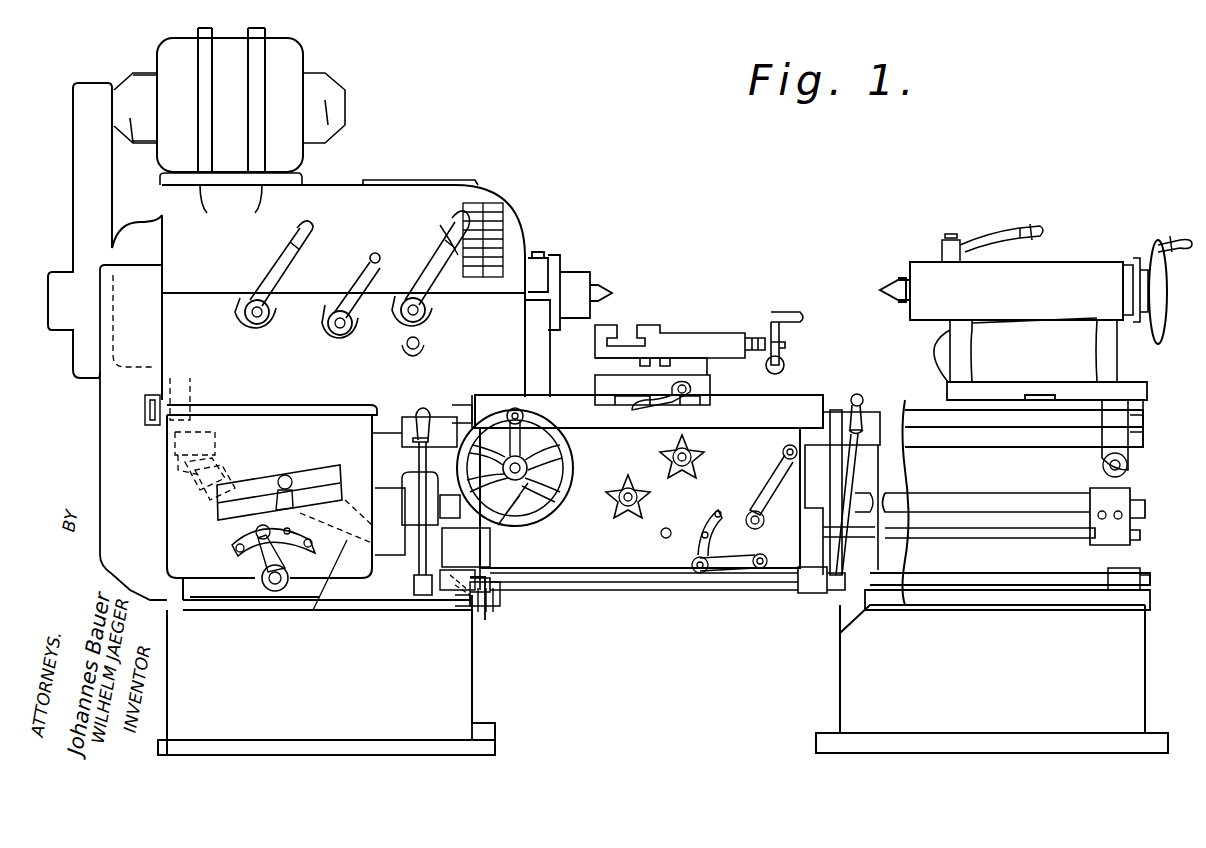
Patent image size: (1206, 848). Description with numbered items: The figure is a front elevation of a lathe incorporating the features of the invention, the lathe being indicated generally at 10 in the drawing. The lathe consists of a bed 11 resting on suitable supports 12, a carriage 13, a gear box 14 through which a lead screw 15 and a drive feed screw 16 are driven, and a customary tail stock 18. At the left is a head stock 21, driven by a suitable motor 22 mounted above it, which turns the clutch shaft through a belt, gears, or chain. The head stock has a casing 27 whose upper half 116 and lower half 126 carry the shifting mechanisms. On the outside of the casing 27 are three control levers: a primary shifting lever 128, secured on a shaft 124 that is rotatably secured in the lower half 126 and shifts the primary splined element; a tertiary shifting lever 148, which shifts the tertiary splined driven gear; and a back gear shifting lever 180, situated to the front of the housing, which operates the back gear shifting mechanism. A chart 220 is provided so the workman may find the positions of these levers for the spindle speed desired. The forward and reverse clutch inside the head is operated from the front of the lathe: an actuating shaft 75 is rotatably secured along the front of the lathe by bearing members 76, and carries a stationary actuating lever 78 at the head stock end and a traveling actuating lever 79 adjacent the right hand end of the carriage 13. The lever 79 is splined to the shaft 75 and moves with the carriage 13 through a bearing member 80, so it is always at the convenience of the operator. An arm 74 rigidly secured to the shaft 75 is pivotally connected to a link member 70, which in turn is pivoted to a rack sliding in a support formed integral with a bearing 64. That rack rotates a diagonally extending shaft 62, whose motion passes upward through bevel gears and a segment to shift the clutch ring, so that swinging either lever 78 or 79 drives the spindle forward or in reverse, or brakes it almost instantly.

The lead screw feed connection 10 is at (472, 555).
The bed 11 is at (905, 410).
The supports 12 is at (455, 700).
The carriage 13 is at (635, 550).
The gear box 14 is at (222, 570).
The lead screw 15 is at (925, 507).
The drive feed screw 16 is at (958, 598).
The tail stock 18 is at (1040, 290).
The head stock 21 is at (430, 195).
The motor 22 is at (283, 103).
The casing 27 is at (261, 437).
The diagonally extending shaft 62 is at (312, 618).
The bearing 64 is at (505, 595).
The link member 70 is at (490, 612).
The arm 74 is at (500, 690).
The actuating shaft 75 is at (690, 580).
The bearing members 76 is at (452, 565).
The stationary actuating lever 78 is at (420, 555).
The traveling actuating lever 79 is at (838, 540).
The bearing member 80 is at (818, 592).
The upper half of the housing 116 is at (330, 200).
The shaft 124 is at (265, 330).
The lower half of the housing 126 is at (505, 380).
The primary shifting lever 128 is at (283, 268).
The tertiary shifting lever 148 is at (383, 268).
The back gear shifting lever 180 is at (470, 212).
The chart 220 is at (495, 228).